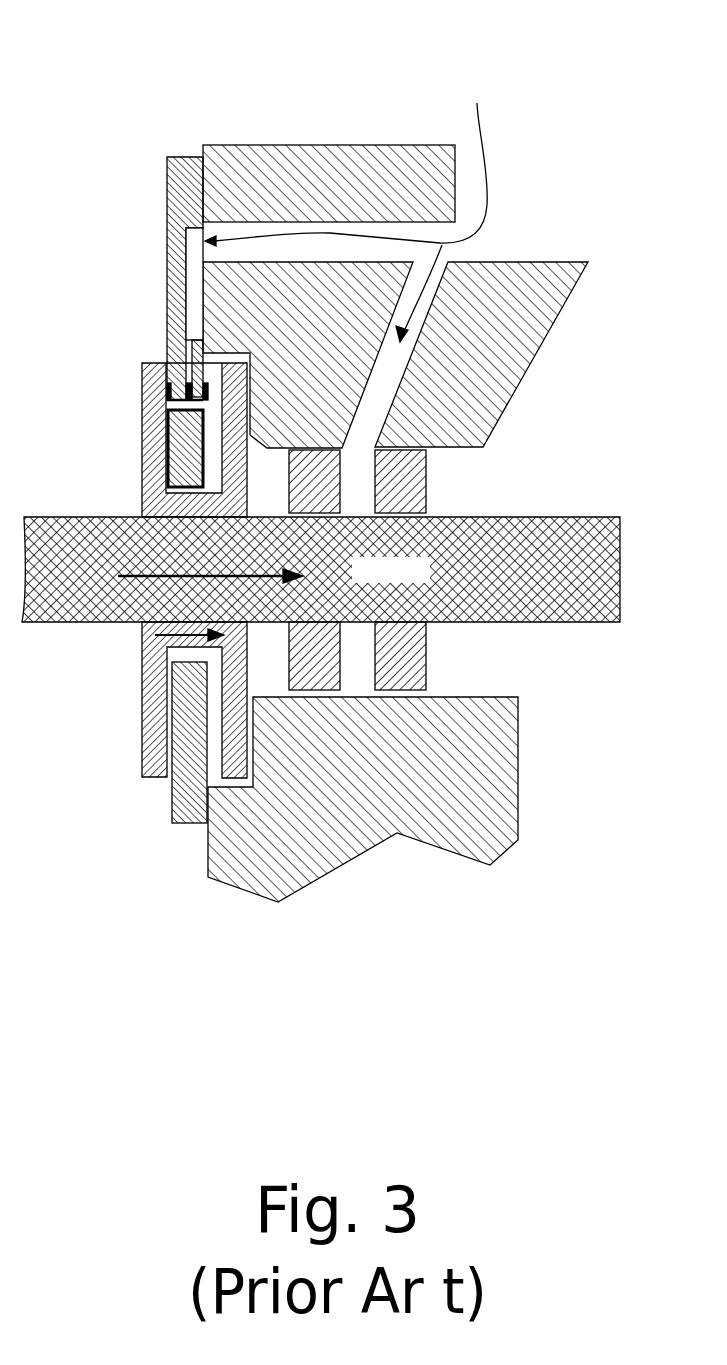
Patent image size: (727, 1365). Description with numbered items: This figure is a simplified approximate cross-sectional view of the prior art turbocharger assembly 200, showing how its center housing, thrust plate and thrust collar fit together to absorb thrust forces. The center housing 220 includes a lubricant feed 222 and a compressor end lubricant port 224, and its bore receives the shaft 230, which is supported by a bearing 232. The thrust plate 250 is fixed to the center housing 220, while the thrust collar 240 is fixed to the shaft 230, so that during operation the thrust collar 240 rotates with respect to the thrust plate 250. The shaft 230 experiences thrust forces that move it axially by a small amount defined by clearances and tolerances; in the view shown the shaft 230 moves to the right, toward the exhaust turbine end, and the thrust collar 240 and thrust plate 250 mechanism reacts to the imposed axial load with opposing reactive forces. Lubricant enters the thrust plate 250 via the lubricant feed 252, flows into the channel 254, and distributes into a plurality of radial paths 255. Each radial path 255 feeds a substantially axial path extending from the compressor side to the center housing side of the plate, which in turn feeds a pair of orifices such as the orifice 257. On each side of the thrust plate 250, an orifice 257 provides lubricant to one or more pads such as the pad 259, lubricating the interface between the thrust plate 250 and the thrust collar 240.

The turbocharger assembly 200 is at (386, 57).
The center housing 220 is at (275, 145).
The lubricant feed 222 is at (452, 143).
The compressor end lubricant port 224 is at (205, 261).
The shaft 230 is at (411, 579).
The bearing 232 is at (427, 480).
The thrust collar 240 is at (143, 473).
The thrust plate 250 is at (167, 180).
The lubricant feed 252 is at (186, 236).
The channel 254 is at (166, 284).
The radial path 255 is at (160, 392).
The orifice 257 is at (168, 408).
The pad 259 is at (157, 440).